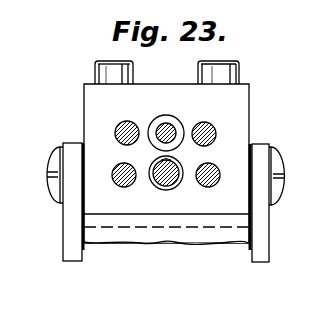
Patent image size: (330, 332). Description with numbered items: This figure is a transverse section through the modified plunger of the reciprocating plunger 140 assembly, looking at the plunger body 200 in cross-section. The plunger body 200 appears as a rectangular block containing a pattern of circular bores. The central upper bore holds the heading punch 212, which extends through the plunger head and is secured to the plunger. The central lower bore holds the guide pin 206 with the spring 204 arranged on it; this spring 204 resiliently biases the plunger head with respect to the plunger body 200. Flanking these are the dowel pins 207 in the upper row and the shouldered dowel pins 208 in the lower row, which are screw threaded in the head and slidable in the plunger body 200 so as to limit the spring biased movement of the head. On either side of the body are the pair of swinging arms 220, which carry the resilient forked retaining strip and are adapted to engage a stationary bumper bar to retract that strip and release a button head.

The plunger body 200 is at (143, 87).
The heading punch 212 is at (165, 124).
The dowel pins 207 is at (125, 122).
The shouldered dowel pins 208 is at (113, 168).
The spring 204 is at (158, 185).
The guide pin 206 is at (178, 186).
The reciprocating plunger 140 is at (160, 235).
The swinging arms 220 is at (68, 238).